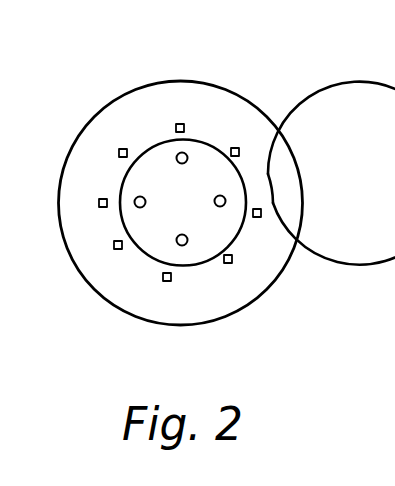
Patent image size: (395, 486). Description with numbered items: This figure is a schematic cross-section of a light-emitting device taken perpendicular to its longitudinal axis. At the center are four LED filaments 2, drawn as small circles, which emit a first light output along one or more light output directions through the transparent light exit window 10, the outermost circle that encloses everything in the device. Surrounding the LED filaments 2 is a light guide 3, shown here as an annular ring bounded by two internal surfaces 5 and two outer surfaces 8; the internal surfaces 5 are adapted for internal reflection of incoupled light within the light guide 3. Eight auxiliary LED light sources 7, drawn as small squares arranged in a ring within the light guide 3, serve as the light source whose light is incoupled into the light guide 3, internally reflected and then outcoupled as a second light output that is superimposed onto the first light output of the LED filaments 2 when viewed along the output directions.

The transparent light exit window 10 is at (104, 109).
The light guide 3 is at (112, 175).
The outer surface 8 is at (289, 194).
The internal surface 5 is at (110, 227).
The auxiliary LED light source 7 is at (184, 127).
The LED filament 2 is at (146, 204).